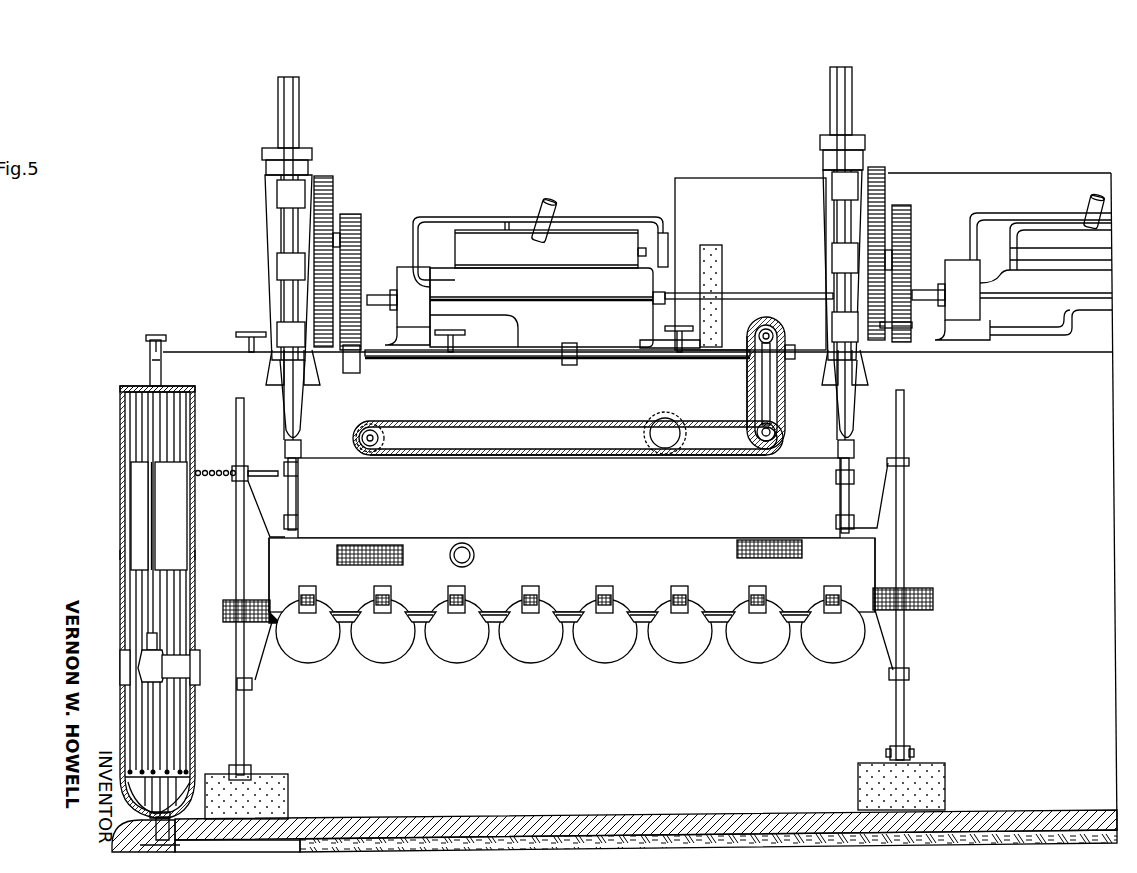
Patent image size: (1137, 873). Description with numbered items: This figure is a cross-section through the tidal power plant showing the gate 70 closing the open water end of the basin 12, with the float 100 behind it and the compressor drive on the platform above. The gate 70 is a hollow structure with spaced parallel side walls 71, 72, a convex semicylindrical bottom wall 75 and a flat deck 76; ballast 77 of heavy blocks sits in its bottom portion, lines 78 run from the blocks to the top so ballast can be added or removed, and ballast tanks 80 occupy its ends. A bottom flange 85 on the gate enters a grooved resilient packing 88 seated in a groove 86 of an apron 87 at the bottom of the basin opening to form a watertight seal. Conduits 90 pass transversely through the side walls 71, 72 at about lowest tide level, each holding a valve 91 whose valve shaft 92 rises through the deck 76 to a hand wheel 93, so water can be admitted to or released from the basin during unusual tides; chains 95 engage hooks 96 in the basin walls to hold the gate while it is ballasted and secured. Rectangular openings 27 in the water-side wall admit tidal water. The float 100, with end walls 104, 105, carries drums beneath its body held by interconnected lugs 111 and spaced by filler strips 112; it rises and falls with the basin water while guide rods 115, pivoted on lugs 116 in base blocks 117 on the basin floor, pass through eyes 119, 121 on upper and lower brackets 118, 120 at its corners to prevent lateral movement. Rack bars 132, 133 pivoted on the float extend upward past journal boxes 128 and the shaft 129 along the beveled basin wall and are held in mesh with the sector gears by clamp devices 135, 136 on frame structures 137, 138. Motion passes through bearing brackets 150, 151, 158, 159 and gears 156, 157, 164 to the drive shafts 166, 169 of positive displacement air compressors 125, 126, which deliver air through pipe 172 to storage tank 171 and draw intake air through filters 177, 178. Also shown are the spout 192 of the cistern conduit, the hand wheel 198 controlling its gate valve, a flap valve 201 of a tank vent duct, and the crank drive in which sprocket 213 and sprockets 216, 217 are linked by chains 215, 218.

The basin 12 is at (203, 373).
The openings 27 is at (568, 825).
The gate 70 is at (148, 572).
The side wall 71 is at (193, 527).
The side wall 72 is at (127, 556).
The bottom wall 75 is at (175, 802).
The top wall or deck 76 is at (122, 386).
The ballast 77 is at (177, 785).
The lines 78 is at (180, 722).
The ballast tanks 80 is at (137, 523).
The flange 85 is at (178, 820).
The groove 86 is at (178, 840).
The apron 87 is at (135, 842).
The grooved packing 88 is at (205, 835).
The conduits 90 is at (175, 668).
The valves 91 is at (157, 652).
The valve handles 92 is at (153, 572).
The hand wheel 93 is at (142, 363).
The chains 95 is at (207, 471).
The hooks or fasteners 96 is at (270, 471).
The float 100 is at (262, 553).
The end wall 104 is at (270, 577).
The end wall 105 is at (877, 563).
The lug 111 is at (450, 593).
The filler strips 112 is at (495, 613).
The guide rods 115 is at (904, 712).
The lugs 116 is at (890, 748).
The base blocks 117 is at (873, 788).
The upwardly extending bracket 118 is at (878, 497).
The eye 119 is at (907, 462).
The lower bracket 120 is at (877, 657).
The eye 121 is at (909, 674).
The positive displacement air compressor 125 is at (1027, 250).
The positive displacement air compressor 126 is at (480, 247).
The journal boxes 128 is at (583, 325).
The shaft 129 is at (530, 357).
The rack bar 132 is at (851, 300).
The rack bar 133 is at (294, 303).
The clamp device 135 is at (835, 185).
The clamp device 136 is at (278, 195).
The frame structure 137 is at (828, 280).
The frame structure 138 is at (305, 292).
The bearing brackets 150 is at (893, 247).
The bearing brackets 151 is at (360, 260).
The gear 156 is at (350, 214).
The gear 157 is at (333, 176).
The bearing brackets 158 is at (912, 330).
The bearing brackets 159 is at (372, 357).
The gear 164 is at (907, 210).
The drive shaft 166 is at (928, 290).
The drive shaft 169 is at (372, 294).
The compressed air storage tank 171 is at (718, 197).
The compressed air pipe 172 is at (724, 292).
The air filter and cleaner 177 is at (1092, 196).
The air filter and cleaner 178 is at (555, 217).
The spout or nipple 192 is at (668, 430).
The hand wheel 198 is at (660, 355).
The flap valve 201 is at (767, 395).
The chain sprocket 213 is at (764, 320).
The chain 215 is at (748, 397).
The chain sprocket 216 is at (740, 455).
The chain sprocket 217 is at (380, 452).
The chain 218 is at (497, 405).